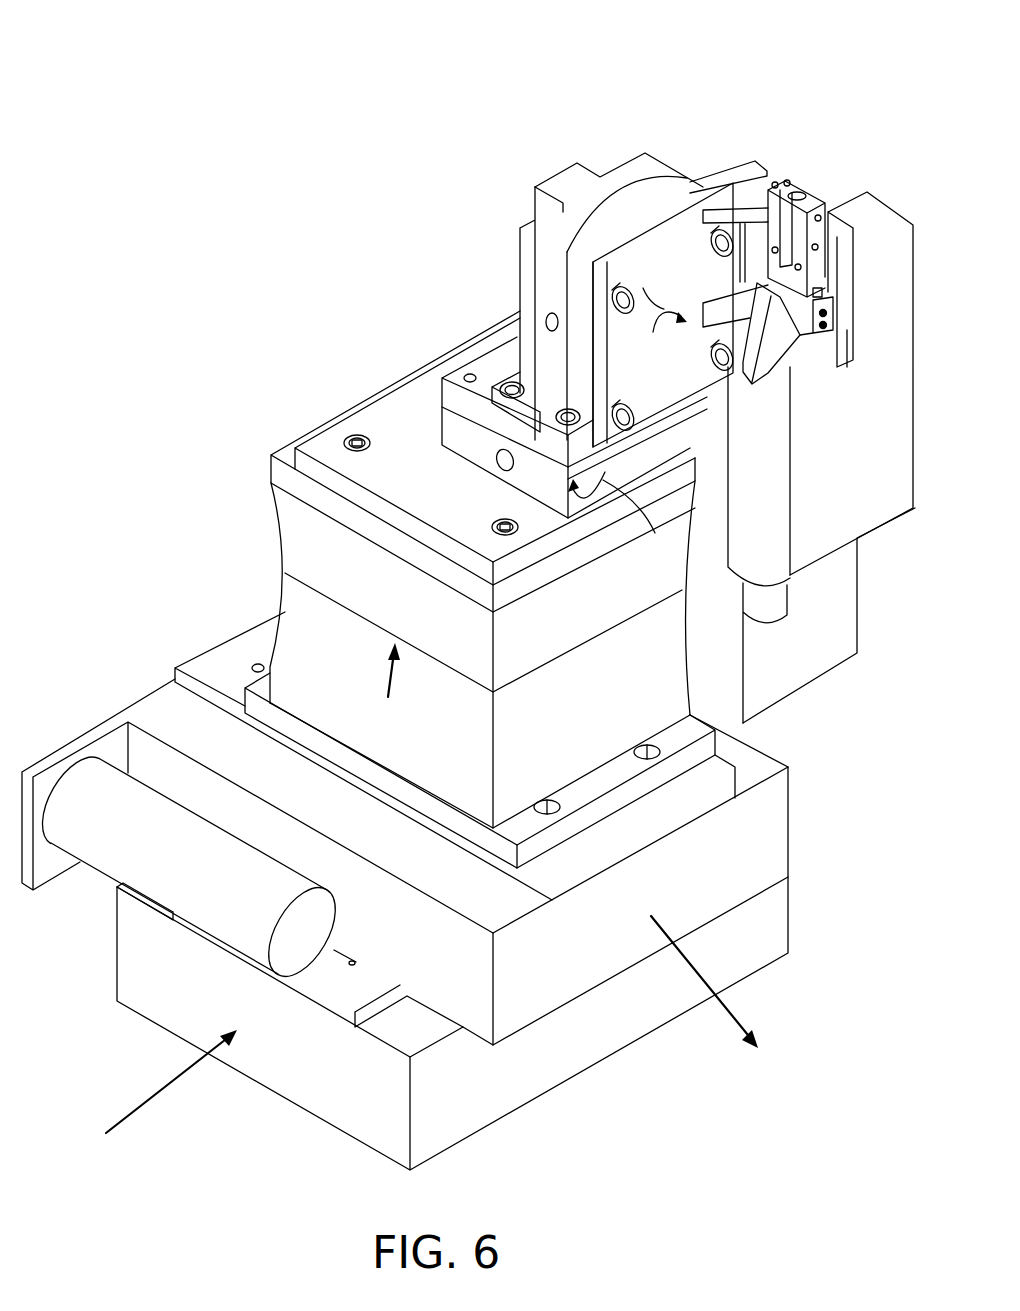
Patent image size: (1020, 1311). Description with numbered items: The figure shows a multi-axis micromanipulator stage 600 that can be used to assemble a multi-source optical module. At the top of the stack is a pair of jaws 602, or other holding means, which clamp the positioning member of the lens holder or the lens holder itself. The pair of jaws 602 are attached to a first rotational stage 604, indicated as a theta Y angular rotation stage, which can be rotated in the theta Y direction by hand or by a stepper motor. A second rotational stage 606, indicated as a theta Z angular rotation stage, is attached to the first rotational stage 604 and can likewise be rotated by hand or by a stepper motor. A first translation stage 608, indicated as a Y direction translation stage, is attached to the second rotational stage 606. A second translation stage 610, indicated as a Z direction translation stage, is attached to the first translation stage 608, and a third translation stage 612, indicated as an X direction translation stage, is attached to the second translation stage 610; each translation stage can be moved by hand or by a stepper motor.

The micromanipulator stage 600 is at (576, 67).
The pair of jaws 602 is at (773, 362).
The first rotational stage 604 is at (635, 217).
The second rotational stage 606 is at (514, 392).
The first translation stage 608 is at (287, 608).
The second translation stage 610 is at (763, 852).
The third translation stage 612 is at (130, 992).